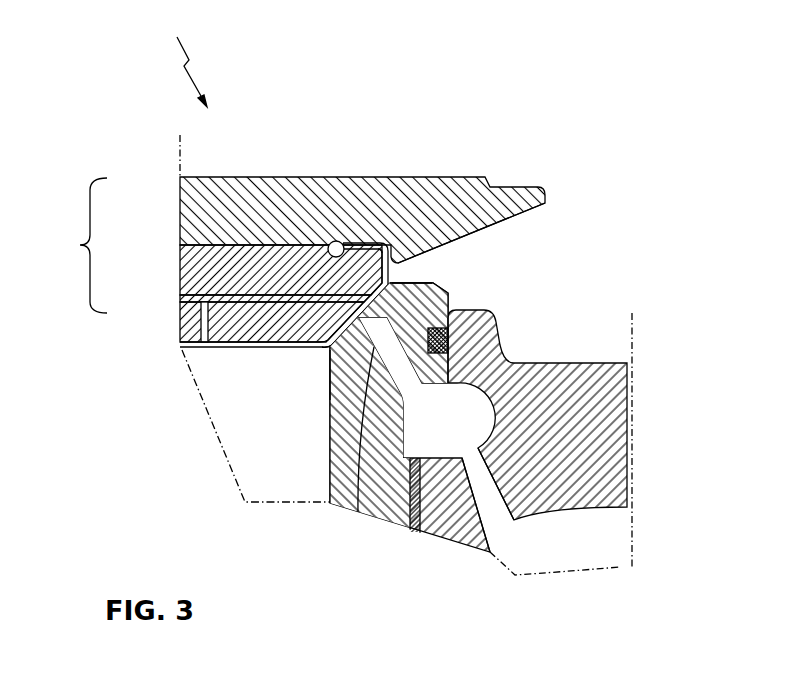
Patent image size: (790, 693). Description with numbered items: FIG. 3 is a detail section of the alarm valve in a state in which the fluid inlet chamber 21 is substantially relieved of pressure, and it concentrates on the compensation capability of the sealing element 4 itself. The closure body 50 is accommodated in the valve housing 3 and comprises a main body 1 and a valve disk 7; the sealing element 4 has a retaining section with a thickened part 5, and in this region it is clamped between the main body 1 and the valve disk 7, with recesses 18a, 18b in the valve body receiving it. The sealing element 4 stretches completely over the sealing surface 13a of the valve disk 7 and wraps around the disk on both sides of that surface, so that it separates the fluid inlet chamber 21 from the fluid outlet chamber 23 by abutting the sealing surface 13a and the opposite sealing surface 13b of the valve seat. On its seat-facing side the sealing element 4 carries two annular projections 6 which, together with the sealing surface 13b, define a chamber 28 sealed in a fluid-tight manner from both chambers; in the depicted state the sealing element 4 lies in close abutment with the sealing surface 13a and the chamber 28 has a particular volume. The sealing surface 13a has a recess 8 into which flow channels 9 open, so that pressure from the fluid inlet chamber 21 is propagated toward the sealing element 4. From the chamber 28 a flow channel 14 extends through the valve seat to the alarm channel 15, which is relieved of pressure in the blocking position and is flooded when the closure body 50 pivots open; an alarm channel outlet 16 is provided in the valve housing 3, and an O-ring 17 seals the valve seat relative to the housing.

The main body 1 is at (451, 198).
The valve housing 3 is at (607, 452).
The sealing element 4 is at (398, 269).
The thickened part 5 is at (334, 240).
The annular projection 6 is at (412, 284).
The valve disk 7 is at (190, 267).
The recess 8 is at (356, 245).
The flow channel 9 is at (221, 298).
The sealing surface 13a is at (325, 318).
The sealing surface 13b is at (325, 352).
The flow channel 14 is at (362, 487).
The alarm channel 15 is at (425, 532).
The alarm channel outlet 16 is at (497, 512).
The O-ring 17 is at (448, 345).
The recess 18a is at (340, 244).
The recess 18b is at (326, 262).
The fluid inlet chamber 21 is at (242, 452).
The fluid outlet chamber 23 is at (177, 64).
The chamber 28 is at (384, 318).
The valve body 50 is at (78, 245).